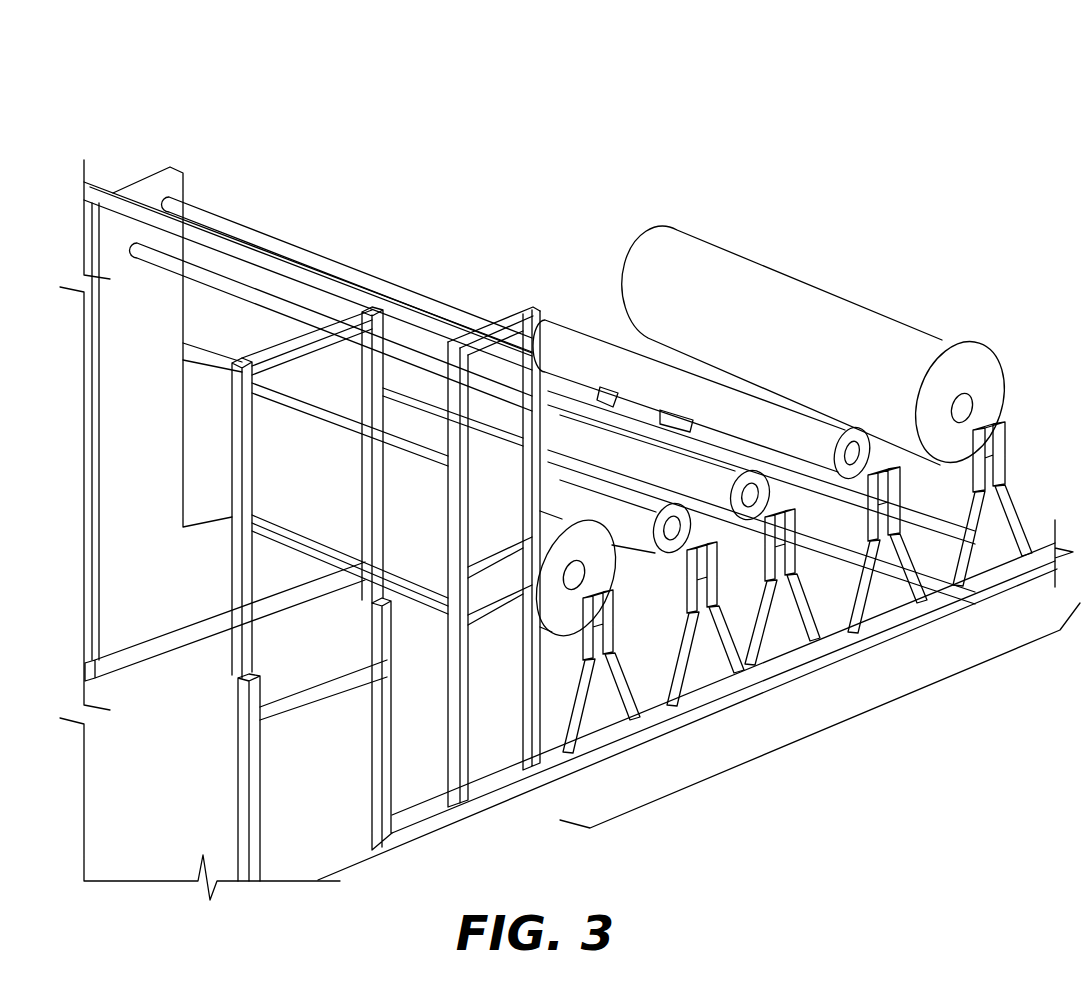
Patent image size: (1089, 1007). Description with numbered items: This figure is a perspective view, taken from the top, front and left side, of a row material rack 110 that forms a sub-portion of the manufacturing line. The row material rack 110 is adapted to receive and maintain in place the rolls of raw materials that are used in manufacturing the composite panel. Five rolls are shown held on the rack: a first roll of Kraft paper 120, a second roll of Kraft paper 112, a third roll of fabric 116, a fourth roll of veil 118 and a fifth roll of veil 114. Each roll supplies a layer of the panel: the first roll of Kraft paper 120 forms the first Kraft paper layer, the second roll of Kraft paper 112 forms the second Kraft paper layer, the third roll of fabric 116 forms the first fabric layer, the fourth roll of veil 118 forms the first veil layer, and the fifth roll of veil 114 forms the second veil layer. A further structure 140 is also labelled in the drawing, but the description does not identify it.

The row material rack 110 is at (825, 728).
The second roll of Kraft paper 112 is at (693, 232).
The fifth roll of veil 114 is at (598, 340).
The third roll of fabric 116 is at (747, 460).
The fourth roll of veil 118 is at (560, 483).
The first roll of Kraft paper 120 is at (398, 477).
The wall structure 140 is at (78, 153).